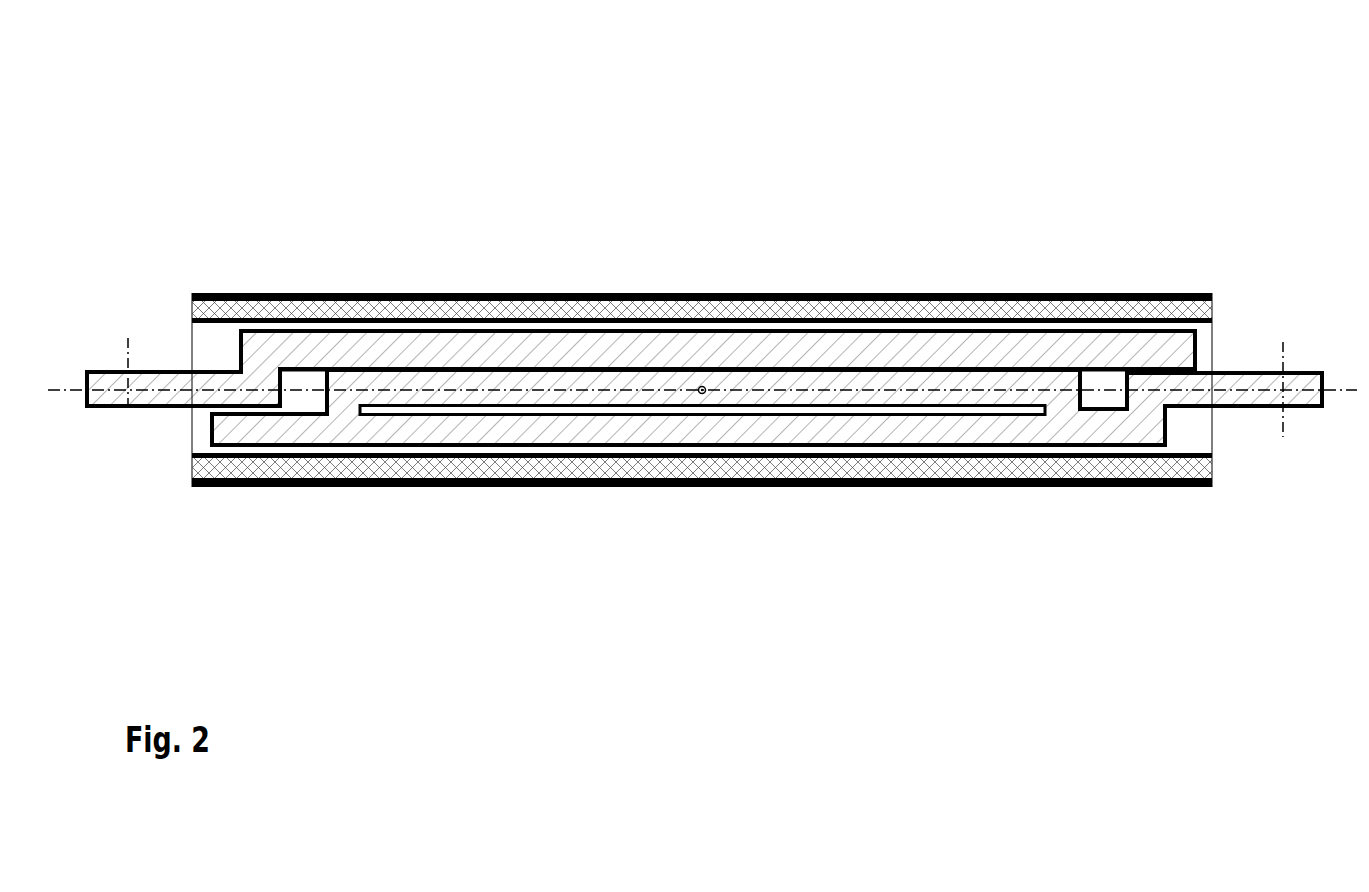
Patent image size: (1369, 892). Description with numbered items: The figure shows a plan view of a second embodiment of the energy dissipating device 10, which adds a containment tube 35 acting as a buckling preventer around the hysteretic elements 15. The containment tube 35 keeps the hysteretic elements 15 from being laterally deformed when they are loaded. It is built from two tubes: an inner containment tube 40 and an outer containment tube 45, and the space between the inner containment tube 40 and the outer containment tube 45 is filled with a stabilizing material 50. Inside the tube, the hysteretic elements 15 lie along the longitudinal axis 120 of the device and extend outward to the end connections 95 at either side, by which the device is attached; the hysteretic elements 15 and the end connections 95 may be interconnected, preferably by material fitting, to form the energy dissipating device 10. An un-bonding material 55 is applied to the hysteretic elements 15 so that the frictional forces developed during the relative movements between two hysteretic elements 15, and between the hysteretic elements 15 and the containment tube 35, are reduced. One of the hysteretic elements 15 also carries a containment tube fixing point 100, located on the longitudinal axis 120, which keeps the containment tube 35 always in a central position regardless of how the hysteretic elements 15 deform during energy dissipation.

The energy dissipating device 10 is at (412, 250).
The hysteretic elements 15 is at (997, 357).
The containment tube 35 is at (769, 380).
The inner containment tube 40 is at (555, 320).
The outer containment tube 45 is at (610, 297).
The stabilizing material 50 is at (675, 313).
The un-bonding material 55 is at (803, 450).
The end connections 95 is at (128, 412).
The containment tube fixing point 100 is at (702, 394).
The longitudinal axis 120 is at (1345, 388).